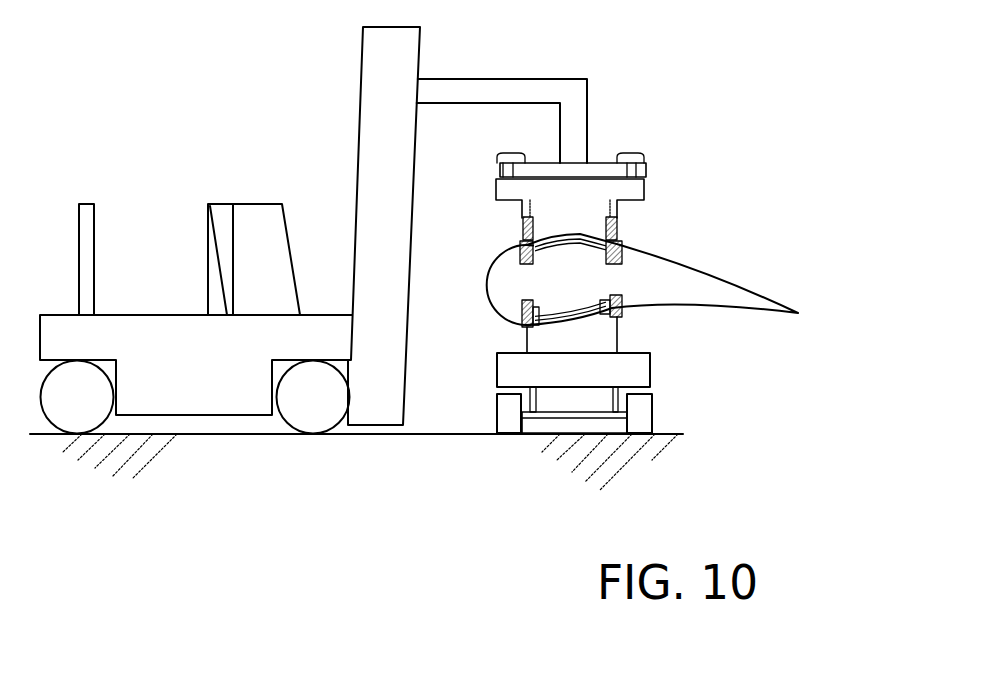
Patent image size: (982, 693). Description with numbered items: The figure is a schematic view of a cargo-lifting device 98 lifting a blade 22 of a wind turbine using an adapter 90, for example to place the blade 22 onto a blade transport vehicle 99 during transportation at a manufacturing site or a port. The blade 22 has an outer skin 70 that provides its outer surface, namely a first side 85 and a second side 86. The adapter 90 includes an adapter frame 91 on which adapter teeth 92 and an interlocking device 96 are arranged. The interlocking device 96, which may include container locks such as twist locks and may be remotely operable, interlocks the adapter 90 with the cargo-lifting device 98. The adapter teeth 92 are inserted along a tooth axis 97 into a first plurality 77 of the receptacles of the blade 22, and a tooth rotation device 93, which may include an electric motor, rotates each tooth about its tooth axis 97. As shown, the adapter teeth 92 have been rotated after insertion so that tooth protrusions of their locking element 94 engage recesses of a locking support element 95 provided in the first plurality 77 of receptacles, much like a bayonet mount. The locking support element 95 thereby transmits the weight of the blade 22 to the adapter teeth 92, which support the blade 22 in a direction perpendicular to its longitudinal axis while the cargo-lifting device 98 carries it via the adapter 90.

The cargo-lifting device 98 is at (188, 135).
The interlocking device 96 is at (638, 150).
The adapter frame 91 is at (647, 190).
The adapter 90 is at (653, 196).
The tooth axis 97 is at (523, 195).
The tooth rotation device 93 is at (523, 212).
The locking element 94 is at (520, 246).
The locking support element 95 is at (522, 256).
The first plurality of the receptacles 77 is at (520, 265).
The adapter teeth 92 is at (622, 236).
The first side 85 is at (722, 280).
The outer skin 70 is at (768, 293).
The blade 22 is at (740, 321).
The second side 86 is at (653, 310).
The blade transport vehicle 99 is at (663, 403).